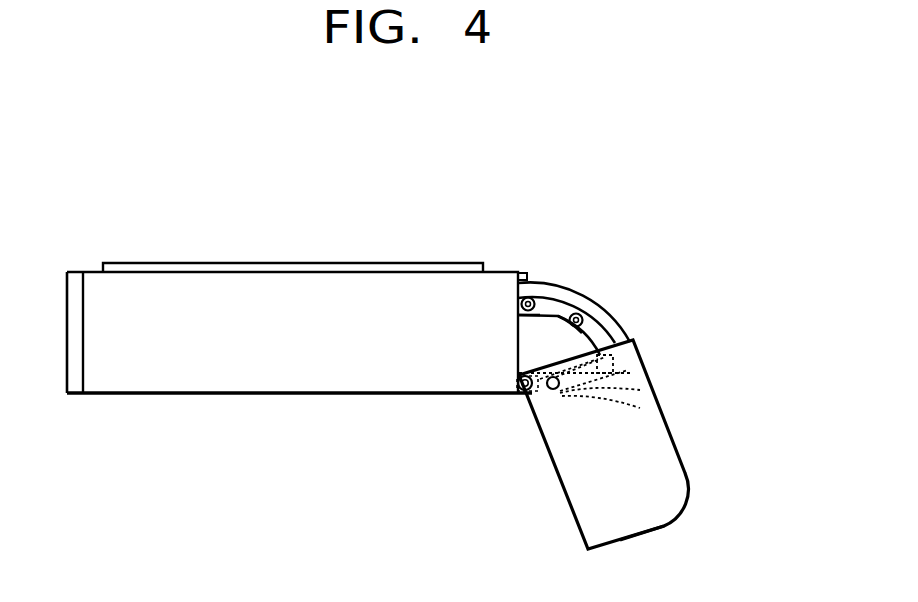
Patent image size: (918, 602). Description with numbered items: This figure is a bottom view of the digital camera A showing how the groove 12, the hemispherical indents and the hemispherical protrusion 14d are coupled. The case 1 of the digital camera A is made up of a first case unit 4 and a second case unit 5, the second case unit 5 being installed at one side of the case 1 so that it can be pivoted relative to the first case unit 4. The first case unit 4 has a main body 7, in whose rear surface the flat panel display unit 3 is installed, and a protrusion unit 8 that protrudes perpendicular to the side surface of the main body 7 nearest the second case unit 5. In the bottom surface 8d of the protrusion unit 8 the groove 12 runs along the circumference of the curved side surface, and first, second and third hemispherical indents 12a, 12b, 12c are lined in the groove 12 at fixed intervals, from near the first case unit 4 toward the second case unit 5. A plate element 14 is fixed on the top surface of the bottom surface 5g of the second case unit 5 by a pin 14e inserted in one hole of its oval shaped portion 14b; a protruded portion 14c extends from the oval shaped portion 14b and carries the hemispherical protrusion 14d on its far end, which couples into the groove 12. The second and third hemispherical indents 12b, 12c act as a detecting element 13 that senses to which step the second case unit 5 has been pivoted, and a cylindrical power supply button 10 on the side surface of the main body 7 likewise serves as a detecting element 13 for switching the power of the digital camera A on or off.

The case 1 is at (322, 280).
The digital camera A is at (594, 199).
The display unit 3 is at (300, 262).
The first case unit 4 is at (333, 397).
The second case unit 5 is at (637, 469).
The bottom surface 5g is at (622, 515).
The main body 7 is at (223, 397).
The protrusion unit 8 is at (583, 279).
The bottom surface 8d is at (592, 311).
The power supply button 10 is at (522, 272).
The groove 12 is at (588, 310).
The first hemispherical indent 12a is at (531, 297).
The second hemispherical indent 12b is at (568, 324).
The third hemispherical indent 12c is at (613, 357).
The detecting element 13 is at (517, 312).
The plate element 14 is at (607, 424).
The oval shaped portion 14b is at (557, 390).
The protruded portion 14c is at (640, 408).
The hemispherical protrusion 14d is at (640, 390).
The pin 14e is at (548, 385).